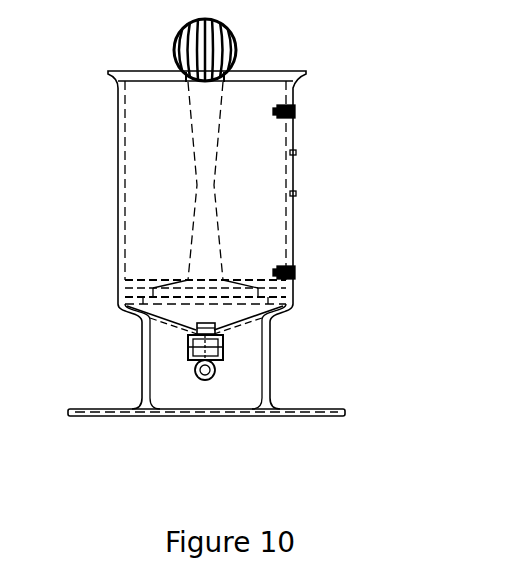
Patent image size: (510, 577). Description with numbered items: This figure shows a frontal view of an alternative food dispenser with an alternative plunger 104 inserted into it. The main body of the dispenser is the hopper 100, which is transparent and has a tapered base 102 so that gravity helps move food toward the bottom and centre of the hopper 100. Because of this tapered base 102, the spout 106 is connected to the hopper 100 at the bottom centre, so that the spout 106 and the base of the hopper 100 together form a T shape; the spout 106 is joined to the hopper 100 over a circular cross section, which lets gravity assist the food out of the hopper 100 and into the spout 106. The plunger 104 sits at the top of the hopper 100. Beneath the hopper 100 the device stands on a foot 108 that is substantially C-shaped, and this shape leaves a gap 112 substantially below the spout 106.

The hopper 100 is at (278, 182).
The tapered base 102 is at (264, 302).
The knob 104 is at (238, 50).
The spout 106 is at (217, 368).
The foot 108 is at (295, 416).
The gap 112 is at (187, 416).